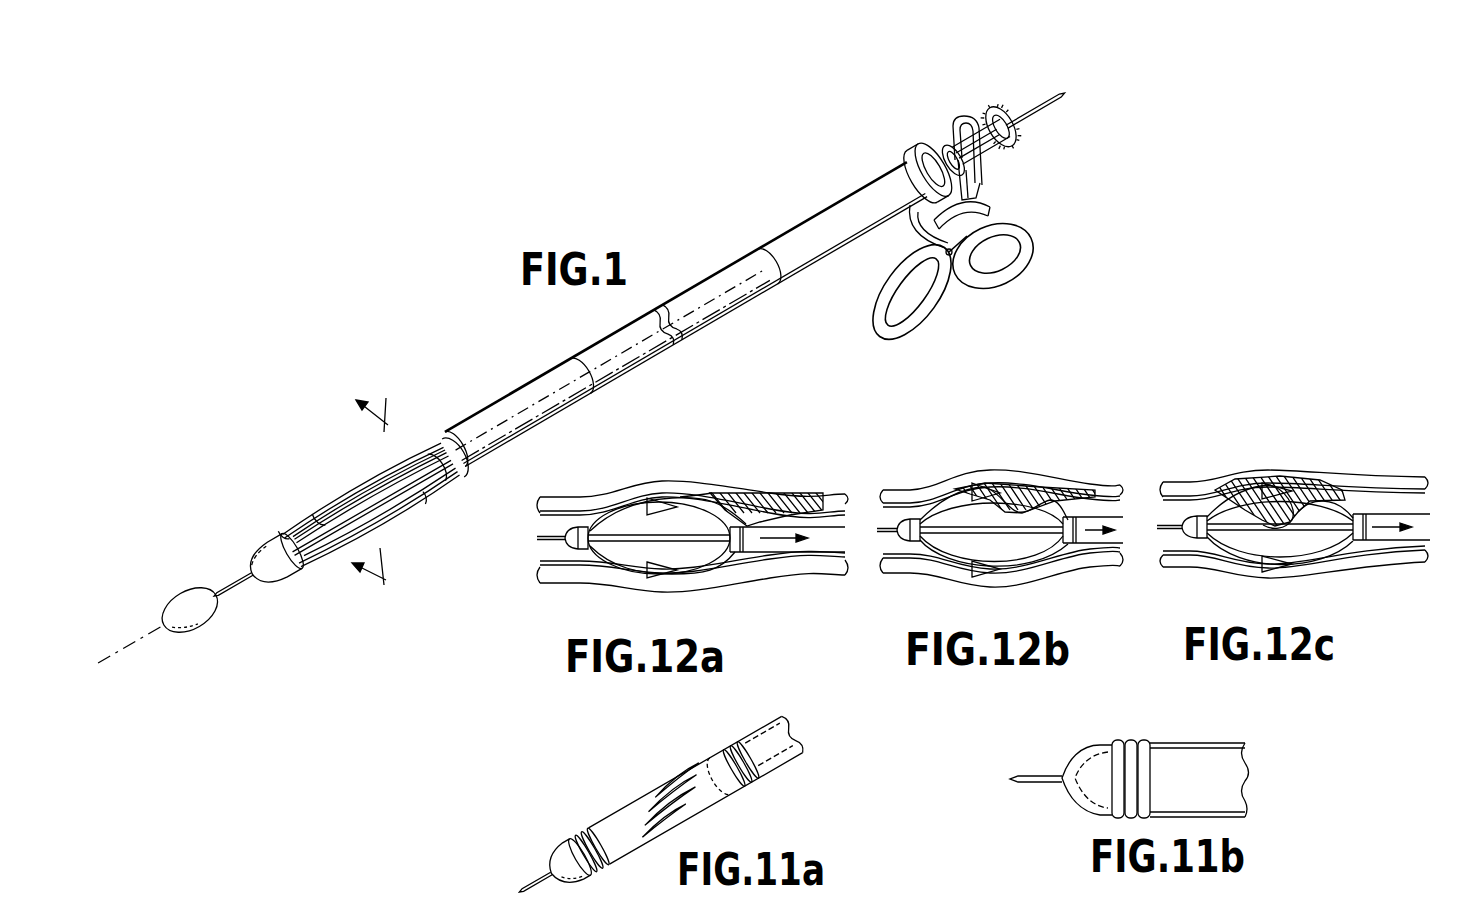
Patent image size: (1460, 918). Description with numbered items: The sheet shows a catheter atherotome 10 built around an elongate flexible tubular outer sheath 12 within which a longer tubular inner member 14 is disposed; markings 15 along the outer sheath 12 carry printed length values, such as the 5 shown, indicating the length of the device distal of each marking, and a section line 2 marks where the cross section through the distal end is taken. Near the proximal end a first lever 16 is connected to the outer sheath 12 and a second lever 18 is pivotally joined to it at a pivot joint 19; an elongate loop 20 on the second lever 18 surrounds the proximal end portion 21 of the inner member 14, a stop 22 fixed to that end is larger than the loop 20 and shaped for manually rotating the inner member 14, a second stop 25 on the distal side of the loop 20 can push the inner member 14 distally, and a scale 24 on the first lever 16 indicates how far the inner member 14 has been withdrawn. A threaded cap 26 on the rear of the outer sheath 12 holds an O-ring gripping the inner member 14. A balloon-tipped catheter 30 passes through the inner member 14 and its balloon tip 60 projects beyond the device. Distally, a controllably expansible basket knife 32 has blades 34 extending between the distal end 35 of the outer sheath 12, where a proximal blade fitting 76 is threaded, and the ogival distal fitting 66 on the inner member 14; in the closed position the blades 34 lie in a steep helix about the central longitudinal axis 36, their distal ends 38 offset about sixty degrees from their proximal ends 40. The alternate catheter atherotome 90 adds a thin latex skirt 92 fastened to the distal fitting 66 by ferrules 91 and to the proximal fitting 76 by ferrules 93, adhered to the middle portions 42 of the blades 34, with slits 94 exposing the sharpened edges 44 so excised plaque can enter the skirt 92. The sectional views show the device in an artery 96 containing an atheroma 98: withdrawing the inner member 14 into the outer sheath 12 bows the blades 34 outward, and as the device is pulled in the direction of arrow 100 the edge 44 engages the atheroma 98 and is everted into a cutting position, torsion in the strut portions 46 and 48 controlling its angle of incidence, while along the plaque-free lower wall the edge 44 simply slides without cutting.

In FIG. 1, the section line 2- 2 is at (374, 499).
In FIG. 1, the marking 5 is at (577, 379).
In FIG. 1, the catheter atherotome 10 is at (690, 268).
In FIG. 12a, the catheter atherotome 10 is at (832, 556).
In FIG. 12b, the catheter atherotome 10 is at (1110, 552).
In FIG. 12c, the catheter atherotome 10 is at (1412, 550).
In FIG. 1, the outer sheath 12 is at (825, 213).
In FIG. 12a, the outer sheath 12 is at (817, 522).
In FIG. 12b, the outer sheath 12 is at (1090, 545).
In FIG. 12c, the outer sheath 12 is at (1362, 542).
In FIG. 1, the inner member 14 is at (987, 150).
In FIG. 12a, the inner member 14 is at (696, 550).
In FIG. 12b, the inner member 14 is at (991, 530).
In FIG. 12c, the inner member 14 is at (1240, 555).
In FIG. 1, the markings 15 is at (772, 249).
In FIG. 1, the first lever 16 is at (916, 232).
In FIG. 1, the second lever 18 is at (982, 203).
In FIG. 1, the pivot joint 19 is at (985, 280).
In FIG. 1, the elongate loop 20 is at (966, 115).
In FIG. 1, the proximal end portion 21 is at (1012, 142).
In FIG. 1, the stop 22 is at (1003, 112).
In FIG. 1, the scale 24 is at (985, 222).
In FIG. 1, the second stop 25 is at (941, 158).
In FIG. 1, the cap 26 is at (897, 165).
In FIG. 1, the balloon-tipped catheter 30 is at (1040, 110).
In FIG. 12a, the balloon-tipped catheter 30 is at (558, 560).
In FIG. 12b, the balloon-tipped catheter 30 is at (896, 560).
In FIG. 12c, the balloon-tipped catheter 30 is at (1188, 555).
In FIG. 11a, the balloon-tipped catheter 30 is at (534, 875).
In FIG. 11b, the balloon-tipped catheter 30 is at (1040, 775).
In FIG. 1, the basket knife 32 is at (322, 490).
In FIG. 1, the blades 34 is at (372, 530).
In FIG. 12a, the blades 34 is at (700, 496).
In FIG. 12b, the blades 34 is at (1065, 502).
In FIG. 12c, the blades 34 is at (1340, 497).
In FIG. 1, the distal end 35 is at (468, 460).
In FIG. 1, the central longitudinal axis 36 is at (535, 428).
In FIG. 1, the distal ends 38 is at (262, 545).
In FIG. 1, the proximal ends 40 is at (458, 440).
In FIG. 1, the middle portion 42 is at (360, 500).
In FIG. 12a, the middle portion 42 is at (655, 496).
In FIG. 1, the sharpened edges 44 is at (346, 490).
In FIG. 12a, the sharpened edges 44 is at (686, 496).
In FIG. 12b, the sharpened edges 44 is at (1020, 483).
In FIG. 12c, the sharpened edges 44 is at (1300, 488).
In FIG. 1, the strut portion 46 is at (300, 515).
In FIG. 1, the strut portion 48 is at (426, 496).
In FIG. 1, the balloon tip 60 is at (200, 630).
In FIG. 1, the distal fitting 66 is at (275, 580).
In FIG. 12a, the distal fitting 66 is at (579, 524).
In FIG. 12b, the distal fitting 66 is at (905, 518).
In FIG. 12c, the distal fitting 66 is at (1190, 518).
In FIG. 11a, the distal fitting 66 is at (553, 862).
In FIG. 11b, the distal fitting 66 is at (1092, 752).
In FIG. 1, the proximal blade fitting 76 is at (442, 484).
In FIG. 11a, the proximal blade fitting 76 is at (700, 762).
In FIG. 11a, the catheter atherotome 90 is at (786, 760).
In FIG. 11a, the ferrules 91 is at (594, 874).
In FIG. 11b, the ferrules 91 is at (1132, 738).
In FIG. 11a, the skirt 92 is at (612, 826).
In FIG. 11b, the skirt 92 is at (1220, 742).
In FIG. 11a, the ferrules 93 is at (750, 782).
In FIG. 11a, the slits 94 is at (690, 800).
In FIG. 12a, the artery 96 is at (775, 578).
In FIG. 12b, the artery 96 is at (1072, 568).
In FIG. 12c, the artery 96 is at (1272, 568).
In FIG. 12a, the atheroma 98 is at (775, 493).
In FIG. 12b, the atheroma 98 is at (1040, 488).
In FIG. 12c, the atheroma 98 is at (1268, 478).
In FIG. 12a, the arrow 100 is at (797, 572).
In FIG. 12b, the arrow 100 is at (1105, 490).
In FIG. 12c, the arrow 100 is at (1396, 492).